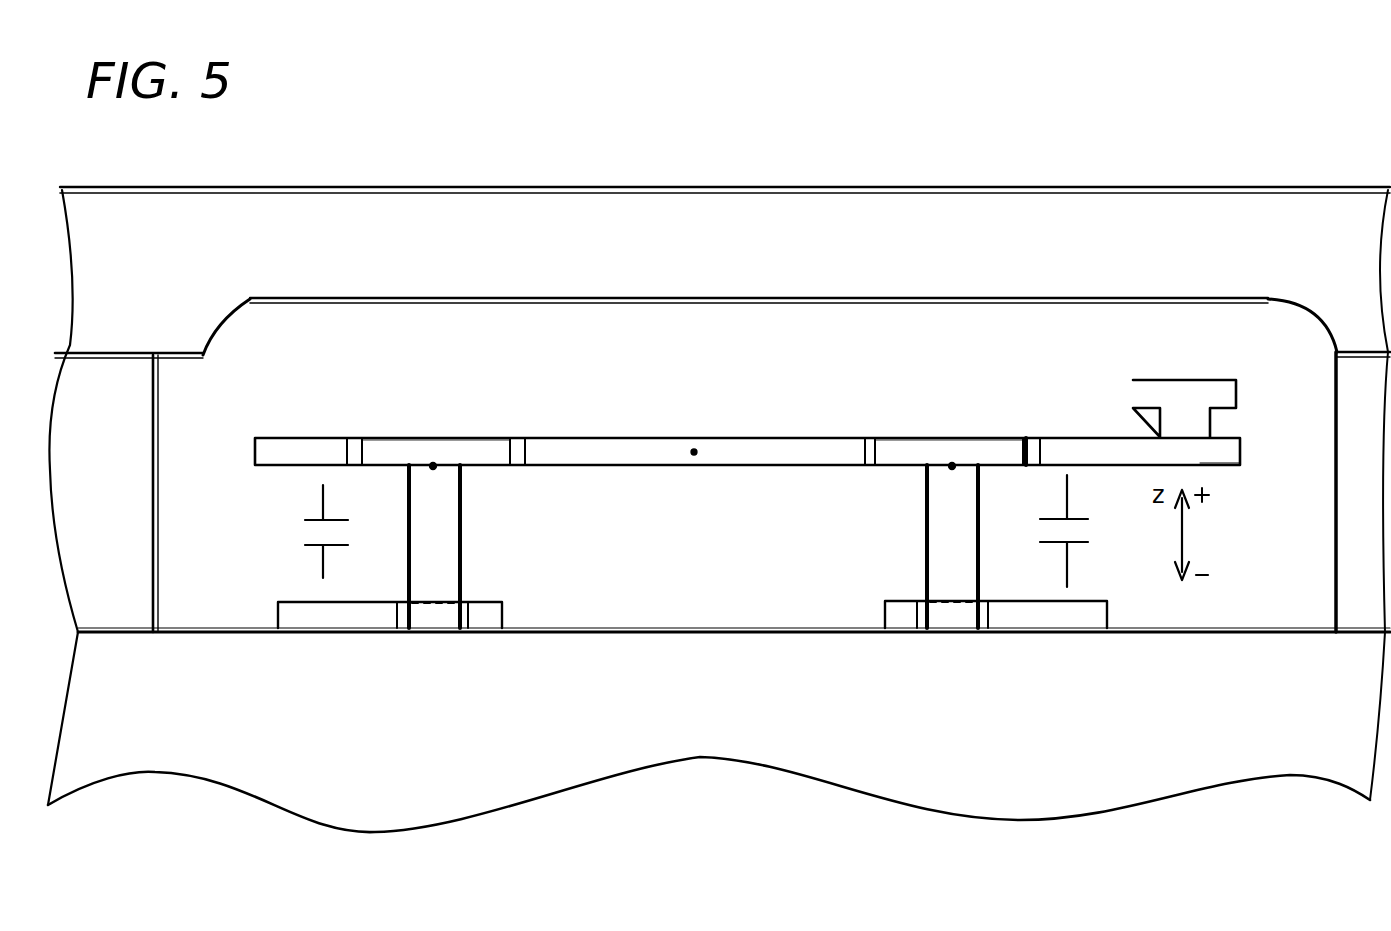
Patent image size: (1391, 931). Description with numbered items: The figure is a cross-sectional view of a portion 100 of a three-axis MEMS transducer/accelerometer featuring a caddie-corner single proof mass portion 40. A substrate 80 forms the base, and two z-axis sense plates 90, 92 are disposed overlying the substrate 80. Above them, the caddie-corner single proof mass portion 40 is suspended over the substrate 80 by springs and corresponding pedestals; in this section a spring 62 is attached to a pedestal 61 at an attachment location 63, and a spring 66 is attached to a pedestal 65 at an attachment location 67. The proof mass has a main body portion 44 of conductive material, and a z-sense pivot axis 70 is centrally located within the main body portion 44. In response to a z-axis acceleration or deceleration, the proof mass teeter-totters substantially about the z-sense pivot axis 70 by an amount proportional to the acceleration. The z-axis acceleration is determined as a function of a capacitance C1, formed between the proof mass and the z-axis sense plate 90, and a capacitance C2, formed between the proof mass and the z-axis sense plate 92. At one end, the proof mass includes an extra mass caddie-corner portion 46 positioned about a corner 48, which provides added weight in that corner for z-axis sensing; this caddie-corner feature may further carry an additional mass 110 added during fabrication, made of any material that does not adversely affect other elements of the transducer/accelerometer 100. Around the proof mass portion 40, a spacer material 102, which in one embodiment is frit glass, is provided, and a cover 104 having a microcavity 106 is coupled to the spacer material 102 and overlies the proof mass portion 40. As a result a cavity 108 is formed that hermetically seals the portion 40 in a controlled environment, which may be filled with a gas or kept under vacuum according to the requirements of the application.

The portion of three-axis MEMS transducer/accelerometer 100 is at (878, 142).
The cover 104 is at (190, 282).
The microcavity 106 is at (233, 313).
The cavity 108 is at (622, 365).
The spacer material 102 is at (134, 501).
The substrate 80 is at (226, 716).
The caddie-corner single proof mass portion 40 is at (315, 408).
The main body portion 44 is at (578, 448).
The spring 62 is at (490, 452).
The z-sense pivot axis 70 is at (710, 428).
The spring 66 is at (1003, 452).
The pedestal 61 is at (447, 551).
The attachment location 63 is at (435, 470).
The pedestal 65 is at (960, 542).
The attachment location 67 is at (953, 470).
The extra mass caddie-corner portion 46 is at (1197, 452).
The additional mass 110 is at (1218, 394).
The corner 48 is at (1250, 424).
The z-axis sense plate 90 is at (333, 622).
The z-axis sense plate 92 is at (1055, 617).
The capacitance C1 is at (346, 531).
The capacitance C2 is at (1082, 531).